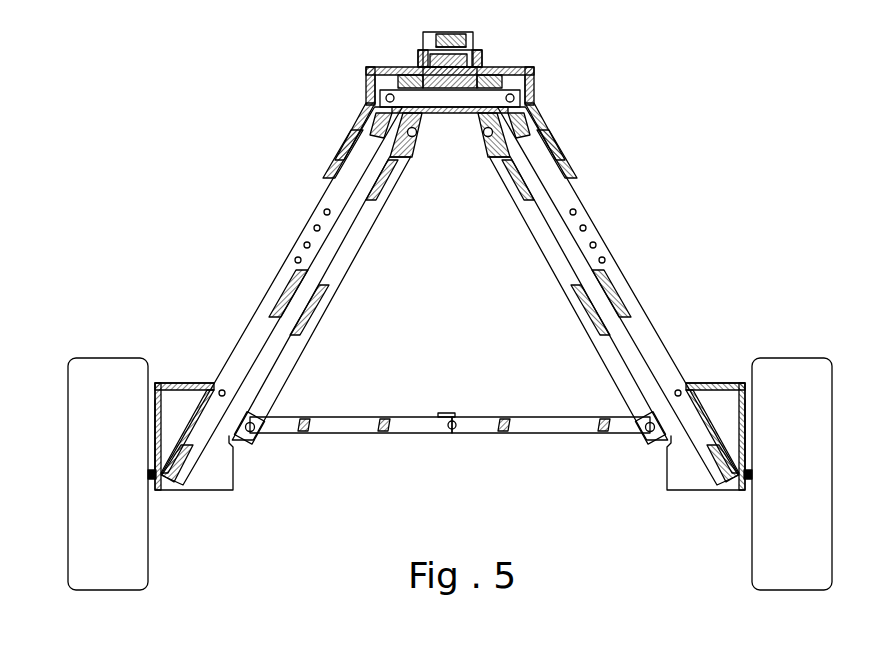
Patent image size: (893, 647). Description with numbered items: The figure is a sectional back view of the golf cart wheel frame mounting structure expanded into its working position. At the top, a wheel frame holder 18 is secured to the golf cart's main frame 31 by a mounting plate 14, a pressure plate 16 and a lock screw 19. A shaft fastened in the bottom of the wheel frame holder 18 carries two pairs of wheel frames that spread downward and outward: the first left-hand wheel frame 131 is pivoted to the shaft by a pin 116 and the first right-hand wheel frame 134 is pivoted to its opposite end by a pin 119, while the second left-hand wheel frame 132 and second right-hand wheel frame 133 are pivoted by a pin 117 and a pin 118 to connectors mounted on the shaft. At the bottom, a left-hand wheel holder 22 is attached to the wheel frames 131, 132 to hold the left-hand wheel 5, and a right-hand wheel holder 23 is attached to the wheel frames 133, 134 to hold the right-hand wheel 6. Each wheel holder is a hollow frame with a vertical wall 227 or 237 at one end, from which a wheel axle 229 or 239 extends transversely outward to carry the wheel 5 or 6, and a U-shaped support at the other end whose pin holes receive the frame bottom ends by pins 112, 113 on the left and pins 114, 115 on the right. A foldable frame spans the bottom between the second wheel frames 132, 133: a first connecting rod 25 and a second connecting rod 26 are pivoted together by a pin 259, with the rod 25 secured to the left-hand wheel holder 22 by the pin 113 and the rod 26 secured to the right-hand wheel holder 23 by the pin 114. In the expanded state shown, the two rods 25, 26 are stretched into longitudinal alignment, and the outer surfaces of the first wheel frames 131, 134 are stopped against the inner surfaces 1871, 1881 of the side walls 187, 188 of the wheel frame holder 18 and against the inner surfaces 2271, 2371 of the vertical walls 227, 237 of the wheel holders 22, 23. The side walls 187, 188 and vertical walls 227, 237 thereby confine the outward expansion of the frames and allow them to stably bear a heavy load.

The left-hand wheel 5 is at (778, 578).
The right-hand wheel 6 is at (78, 520).
The mounting plate 14 is at (468, 32).
The pressure plate 16 is at (480, 52).
The wheel frame holder 18 is at (530, 68).
The lock screw 19 is at (418, 54).
The left-hand wheel holder 22 is at (720, 380).
The right-hand wheel holder 23 is at (186, 383).
The first connecting rod 25 is at (552, 434).
The second connecting rod 26 is at (347, 434).
The main frame 31 is at (433, 32).
The pin 112 is at (679, 389).
The pin 113 is at (647, 434).
The pin 114 is at (252, 437).
The pin 115 is at (222, 389).
The pin 116 is at (537, 110).
The pin 117 is at (480, 148).
The pin 118 is at (416, 140).
The pin 119 is at (372, 103).
The first left-hand wheel frame 131 is at (594, 226).
The second left-hand wheel frame 132 is at (575, 268).
The second right-hand wheel frame 133 is at (334, 291).
The first right-hand wheel frame 134 is at (286, 258).
The side wall 187 is at (556, 137).
The side wall 188 is at (364, 128).
The vertical wall 227 is at (750, 418).
The wheel axle 229 is at (751, 486).
The vertical wall 237 is at (152, 420).
The wheel axle 239 is at (152, 486).
The pin 259 is at (455, 416).
The inner surface 1871 is at (566, 170).
The inner surface 1881 is at (338, 149).
The inner surface 2271 is at (737, 453).
The inner surface 2371 is at (156, 465).